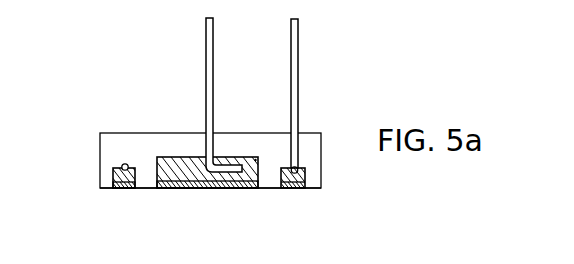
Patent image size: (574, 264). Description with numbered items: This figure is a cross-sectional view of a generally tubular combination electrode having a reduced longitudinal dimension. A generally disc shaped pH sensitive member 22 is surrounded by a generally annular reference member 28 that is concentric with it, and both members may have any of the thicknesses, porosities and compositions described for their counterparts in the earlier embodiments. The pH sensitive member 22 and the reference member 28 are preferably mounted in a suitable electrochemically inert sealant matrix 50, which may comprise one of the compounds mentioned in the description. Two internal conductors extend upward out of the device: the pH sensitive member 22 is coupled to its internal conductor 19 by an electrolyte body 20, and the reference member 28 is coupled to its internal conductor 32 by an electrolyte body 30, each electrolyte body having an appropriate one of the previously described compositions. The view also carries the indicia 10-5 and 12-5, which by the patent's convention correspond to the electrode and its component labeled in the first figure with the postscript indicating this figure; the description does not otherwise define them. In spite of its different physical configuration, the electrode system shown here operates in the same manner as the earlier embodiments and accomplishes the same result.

The sealant matrix 50 is at (321, 160).
The substrate 10-5 is at (249, 193).
The electrolyte body 20 is at (173, 166).
The pH sensitive member 22 is at (201, 184).
The internal conductor 19 is at (205, 65).
The internal conductor 32 is at (300, 73).
The electrolyte body 30 is at (113, 172).
The contact pad 12-5 is at (126, 189).
The reference member 28 is at (288, 188).